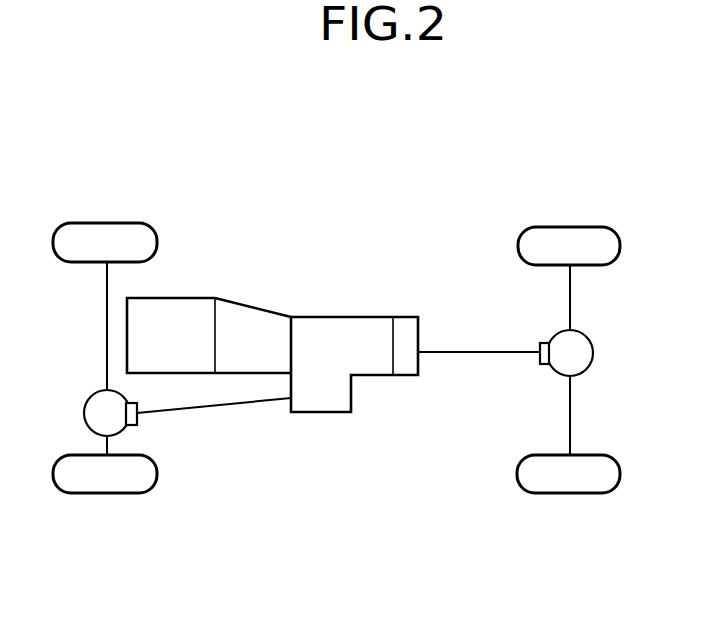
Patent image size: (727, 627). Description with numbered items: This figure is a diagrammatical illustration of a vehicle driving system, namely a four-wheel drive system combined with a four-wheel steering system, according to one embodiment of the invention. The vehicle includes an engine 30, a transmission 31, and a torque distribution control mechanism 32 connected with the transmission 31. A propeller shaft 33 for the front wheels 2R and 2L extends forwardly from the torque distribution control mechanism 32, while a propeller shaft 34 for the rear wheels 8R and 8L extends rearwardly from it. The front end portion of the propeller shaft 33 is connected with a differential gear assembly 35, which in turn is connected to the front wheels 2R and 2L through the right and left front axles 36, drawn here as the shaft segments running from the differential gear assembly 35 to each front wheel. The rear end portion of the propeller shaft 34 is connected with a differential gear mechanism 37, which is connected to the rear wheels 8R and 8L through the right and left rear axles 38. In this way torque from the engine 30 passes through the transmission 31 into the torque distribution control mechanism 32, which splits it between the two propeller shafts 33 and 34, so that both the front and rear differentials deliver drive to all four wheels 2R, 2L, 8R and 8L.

The right front wheel 2R is at (105, 223).
The left front wheel 2L is at (100, 493).
The right rear wheel 8R is at (564, 227).
The left rear wheel 8L is at (568, 493).
The engine 30 is at (187, 298).
The transmission 31 is at (259, 309).
The torque distribution control mechanism 32 is at (363, 317).
The propeller shaft for the front wheels 33 is at (232, 405).
The propeller shaft for the rear wheels 34 is at (472, 353).
The differential gear assembly 35 is at (93, 396).
The front axle 36 is at (107, 294).
The differential gear mechanism 37 is at (594, 353).
The rear axle 38 is at (570, 297).